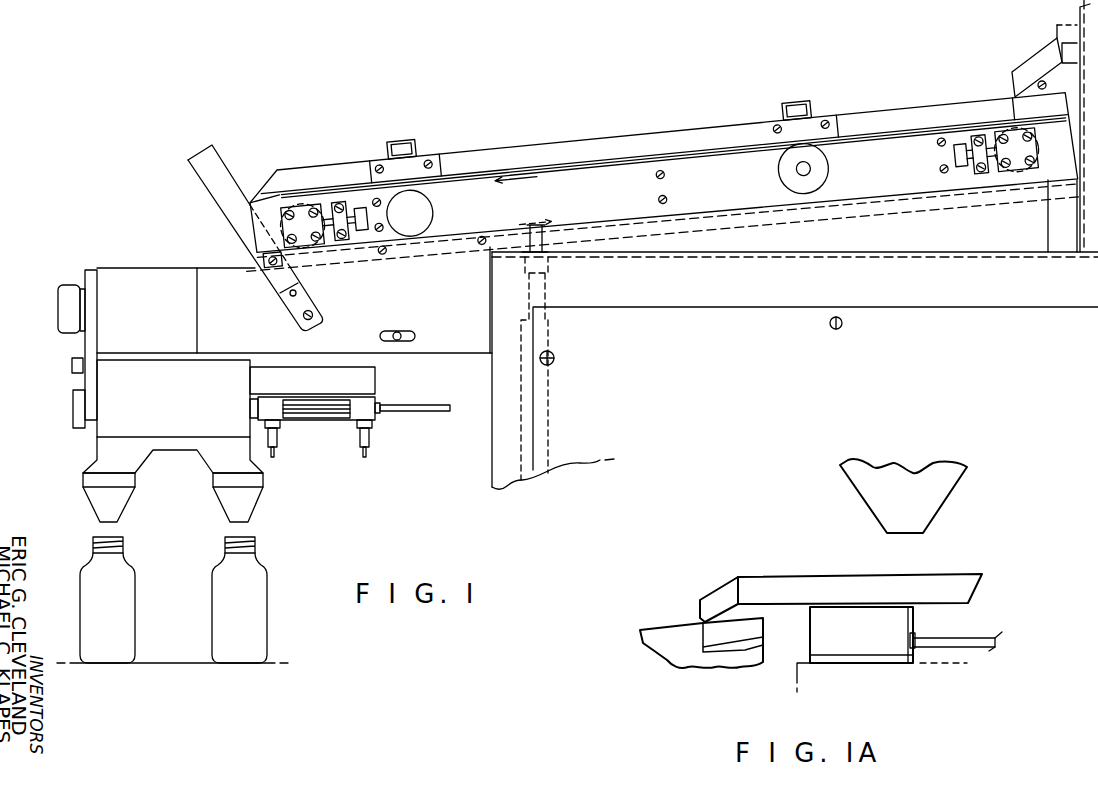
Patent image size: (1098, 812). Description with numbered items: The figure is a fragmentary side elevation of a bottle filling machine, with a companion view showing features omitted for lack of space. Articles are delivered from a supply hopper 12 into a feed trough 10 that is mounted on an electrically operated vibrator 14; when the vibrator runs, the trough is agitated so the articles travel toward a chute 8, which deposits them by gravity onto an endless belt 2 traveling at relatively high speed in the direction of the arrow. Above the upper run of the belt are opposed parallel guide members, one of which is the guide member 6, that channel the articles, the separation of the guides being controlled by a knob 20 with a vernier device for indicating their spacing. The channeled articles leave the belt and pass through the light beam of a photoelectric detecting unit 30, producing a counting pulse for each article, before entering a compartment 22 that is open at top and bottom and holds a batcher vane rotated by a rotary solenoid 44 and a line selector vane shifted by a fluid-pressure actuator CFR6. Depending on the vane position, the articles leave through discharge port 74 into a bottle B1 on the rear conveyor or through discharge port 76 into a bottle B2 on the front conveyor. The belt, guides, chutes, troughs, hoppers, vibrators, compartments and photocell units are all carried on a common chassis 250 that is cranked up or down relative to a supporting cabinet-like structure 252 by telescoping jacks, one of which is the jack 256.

In FIG. 1, the endless belt 2 is at (322, 190).
In FIG. 1, the guide member 6 is at (266, 183).
In FIG. 1, the chute 8 is at (1027, 63).
In FIG. 1A, the chute 8 is at (727, 587).
In FIG. 1, the feed trough 10 is at (1055, 35).
In FIG. 1A, the feed trough 10 is at (765, 585).
In FIG. 1A, the supply hopper 12 is at (860, 505).
In FIG. 1A, the vibrator 14 is at (897, 623).
In FIG. 1, the knob 20 is at (435, 208).
In FIG. 1, the compartment 22 is at (118, 268).
In FIG. 1, the photoelectric detecting unit 30 is at (201, 203).
In FIG. 1, the rotary solenoid 44 is at (60, 312).
In FIG. 1, the discharge port 74 is at (208, 468).
In FIG. 1, the discharge port 76 is at (143, 467).
In FIG. 1, the fluid-pressure actuator CFR6 is at (320, 418).
In FIG. 1, the common chassis 250 is at (960, 228).
In FIG. 1, the supporting cabinet-like structure 252 is at (488, 458).
In FIG. 1, the telescoping jack 256 is at (548, 337).
In FIG. 1, the bottle B1 is at (212, 593).
In FIG. 1, the bottle B2 is at (130, 617).